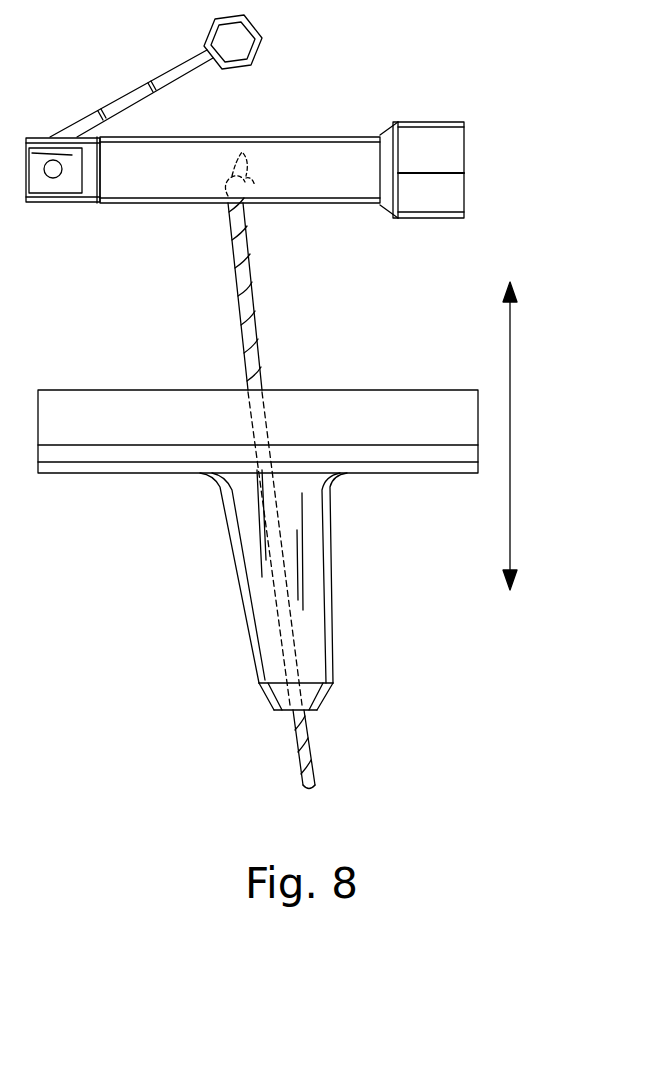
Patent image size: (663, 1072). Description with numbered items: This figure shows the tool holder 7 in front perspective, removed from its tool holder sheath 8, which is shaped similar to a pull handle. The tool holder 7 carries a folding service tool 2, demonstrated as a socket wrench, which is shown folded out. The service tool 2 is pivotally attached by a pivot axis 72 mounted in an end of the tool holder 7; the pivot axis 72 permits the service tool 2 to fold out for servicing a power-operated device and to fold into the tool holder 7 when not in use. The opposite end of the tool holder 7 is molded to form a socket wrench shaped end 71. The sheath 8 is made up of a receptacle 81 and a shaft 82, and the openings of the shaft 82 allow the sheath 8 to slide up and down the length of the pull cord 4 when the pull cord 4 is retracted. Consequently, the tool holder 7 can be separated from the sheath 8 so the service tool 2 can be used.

The folding service tool 2 is at (170, 63).
The tool holder 7 is at (293, 148).
The socket wrench shaped end 71 is at (427, 148).
The pivot axis 72 is at (53, 178).
The tool holder sheath 8 is at (258, 550).
The receptacle 81 is at (160, 445).
The shaft 82 is at (263, 633).
The pull cord 4 is at (310, 747).